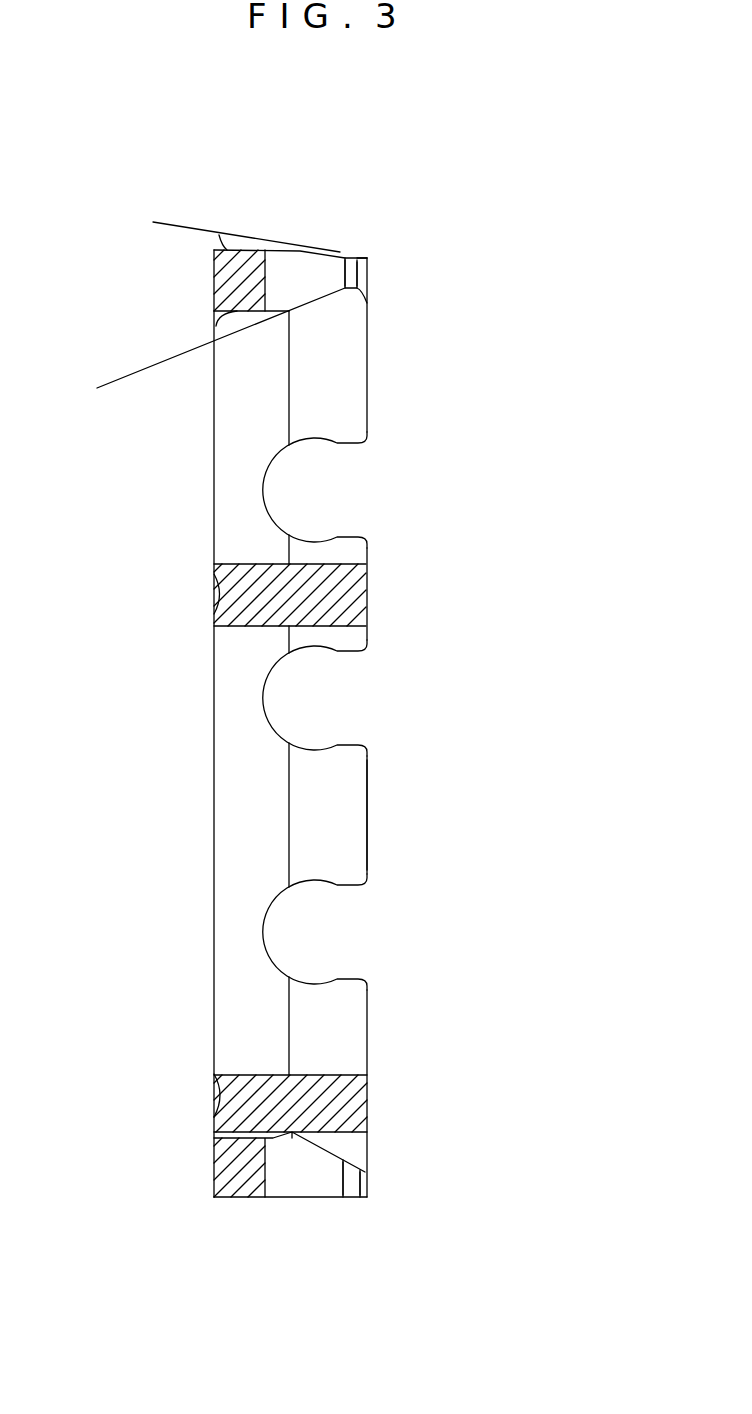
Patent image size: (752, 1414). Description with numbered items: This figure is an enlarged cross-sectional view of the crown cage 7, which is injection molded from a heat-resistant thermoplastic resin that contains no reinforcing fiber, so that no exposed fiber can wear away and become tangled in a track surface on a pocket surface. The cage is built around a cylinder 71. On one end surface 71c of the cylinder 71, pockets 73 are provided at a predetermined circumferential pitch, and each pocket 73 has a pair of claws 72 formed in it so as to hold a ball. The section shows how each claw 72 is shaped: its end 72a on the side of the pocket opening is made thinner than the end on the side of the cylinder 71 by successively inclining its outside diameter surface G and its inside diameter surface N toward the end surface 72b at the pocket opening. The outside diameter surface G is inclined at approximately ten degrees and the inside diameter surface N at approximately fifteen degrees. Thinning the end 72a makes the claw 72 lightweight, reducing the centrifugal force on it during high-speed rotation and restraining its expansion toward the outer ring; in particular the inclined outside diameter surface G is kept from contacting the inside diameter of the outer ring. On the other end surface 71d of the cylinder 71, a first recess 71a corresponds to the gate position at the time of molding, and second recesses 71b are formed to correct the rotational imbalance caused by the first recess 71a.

The crown cage 7 is at (155, 353).
The cylinder 71 is at (222, 968).
The first recess 71a is at (213, 594).
The second recess 71b is at (215, 1103).
The one end surface 71c is at (367, 808).
The other end surface 71d is at (213, 800).
The claw 72 is at (355, 249).
The end on the side of the opening of the pocket 72a is at (332, 270).
The end surface on the side of the opening of the pocket 72b is at (367, 268).
The pocket 73 is at (265, 273).
The outside diameter surface G is at (363, 258).
The inside diameter surface N is at (366, 304).